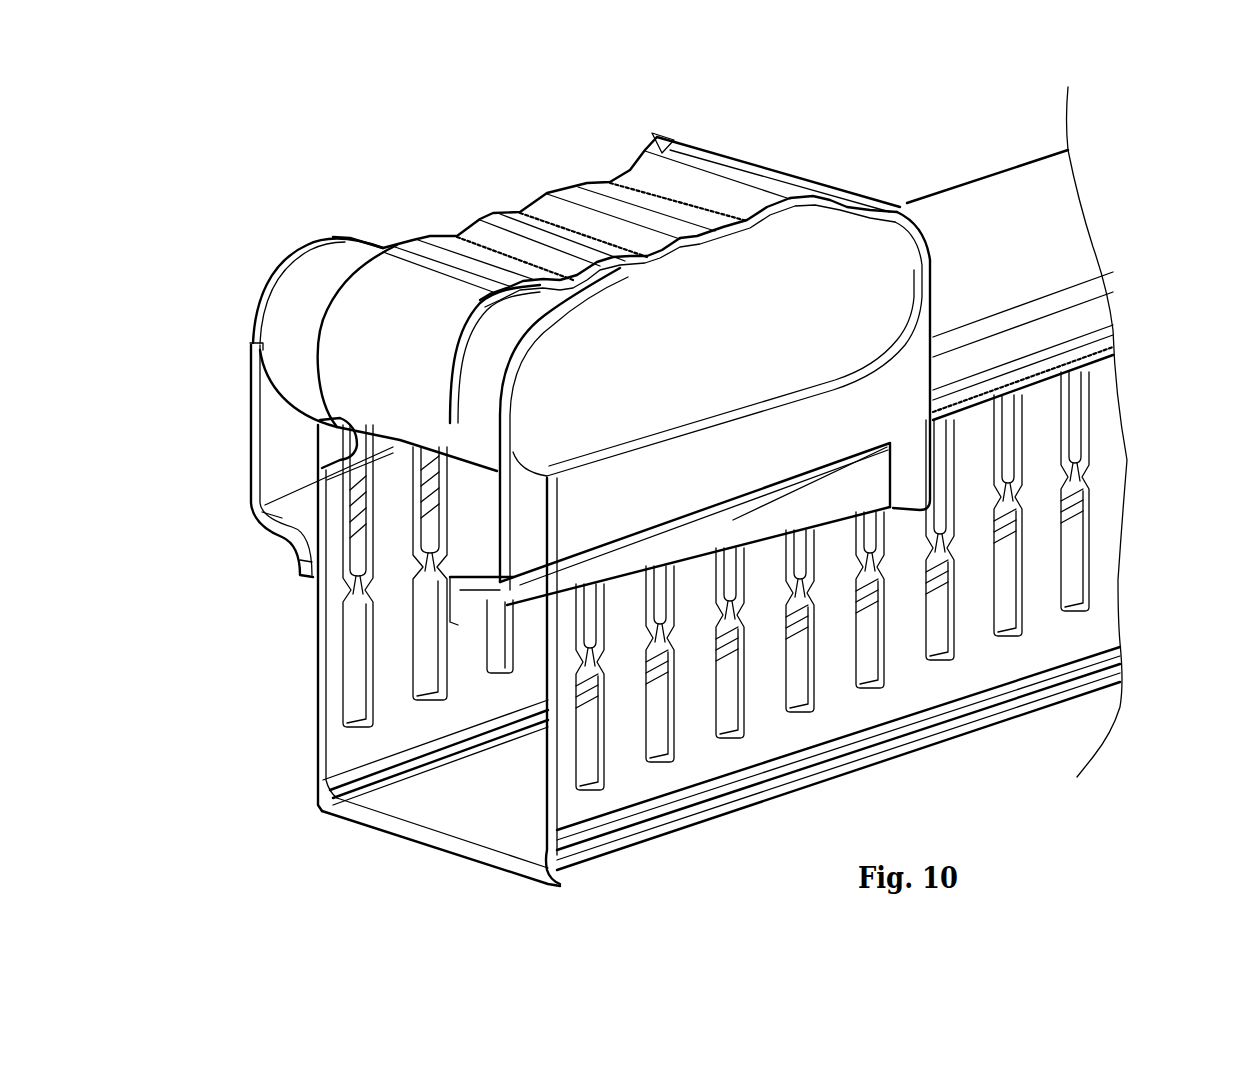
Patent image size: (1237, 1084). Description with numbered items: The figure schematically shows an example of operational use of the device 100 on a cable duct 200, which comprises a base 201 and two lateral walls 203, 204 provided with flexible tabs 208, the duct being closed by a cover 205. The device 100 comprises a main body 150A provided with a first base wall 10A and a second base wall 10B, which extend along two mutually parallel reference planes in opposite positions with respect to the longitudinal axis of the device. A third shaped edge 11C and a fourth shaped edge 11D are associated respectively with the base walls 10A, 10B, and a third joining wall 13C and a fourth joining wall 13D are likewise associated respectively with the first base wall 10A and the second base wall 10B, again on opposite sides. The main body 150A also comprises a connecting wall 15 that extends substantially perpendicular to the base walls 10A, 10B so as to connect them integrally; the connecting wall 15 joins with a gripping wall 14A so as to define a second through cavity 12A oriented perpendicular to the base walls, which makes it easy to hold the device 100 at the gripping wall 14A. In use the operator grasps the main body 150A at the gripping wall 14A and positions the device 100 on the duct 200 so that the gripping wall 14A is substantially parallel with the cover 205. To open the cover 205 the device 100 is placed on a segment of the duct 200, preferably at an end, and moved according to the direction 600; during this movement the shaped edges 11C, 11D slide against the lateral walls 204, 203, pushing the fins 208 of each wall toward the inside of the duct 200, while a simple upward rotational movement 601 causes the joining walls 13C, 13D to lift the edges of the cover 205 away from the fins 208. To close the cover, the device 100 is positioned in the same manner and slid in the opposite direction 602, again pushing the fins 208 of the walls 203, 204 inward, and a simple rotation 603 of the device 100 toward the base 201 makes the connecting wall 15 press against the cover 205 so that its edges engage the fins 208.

The device 100 is at (633, 432).
The cable duct 200 is at (665, 486).
The first base wall 10A is at (913, 337).
The second base wall 10B is at (280, 420).
The third shaped edge 11C is at (767, 527).
The fourth shaped edge 11D is at (300, 560).
The second through cavity 12A is at (647, 343).
The third joining wall 13C is at (467, 633).
The fourth joining wall 13D is at (277, 523).
The gripping wall 14A is at (547, 200).
The connecting wall 15 is at (722, 380).
The main body 150A is at (578, 170).
The base 201 is at (423, 817).
The lateral wall 203 is at (313, 653).
The lateral wall 204 is at (833, 727).
The cover 205 is at (998, 190).
The flexible tabs 208 is at (337, 697).
The direction 600 is at (1173, 273).
The upward rotational movement 601 is at (242, 207).
The opposite direction 602 is at (1110, 210).
The rotation 603 is at (280, 183).